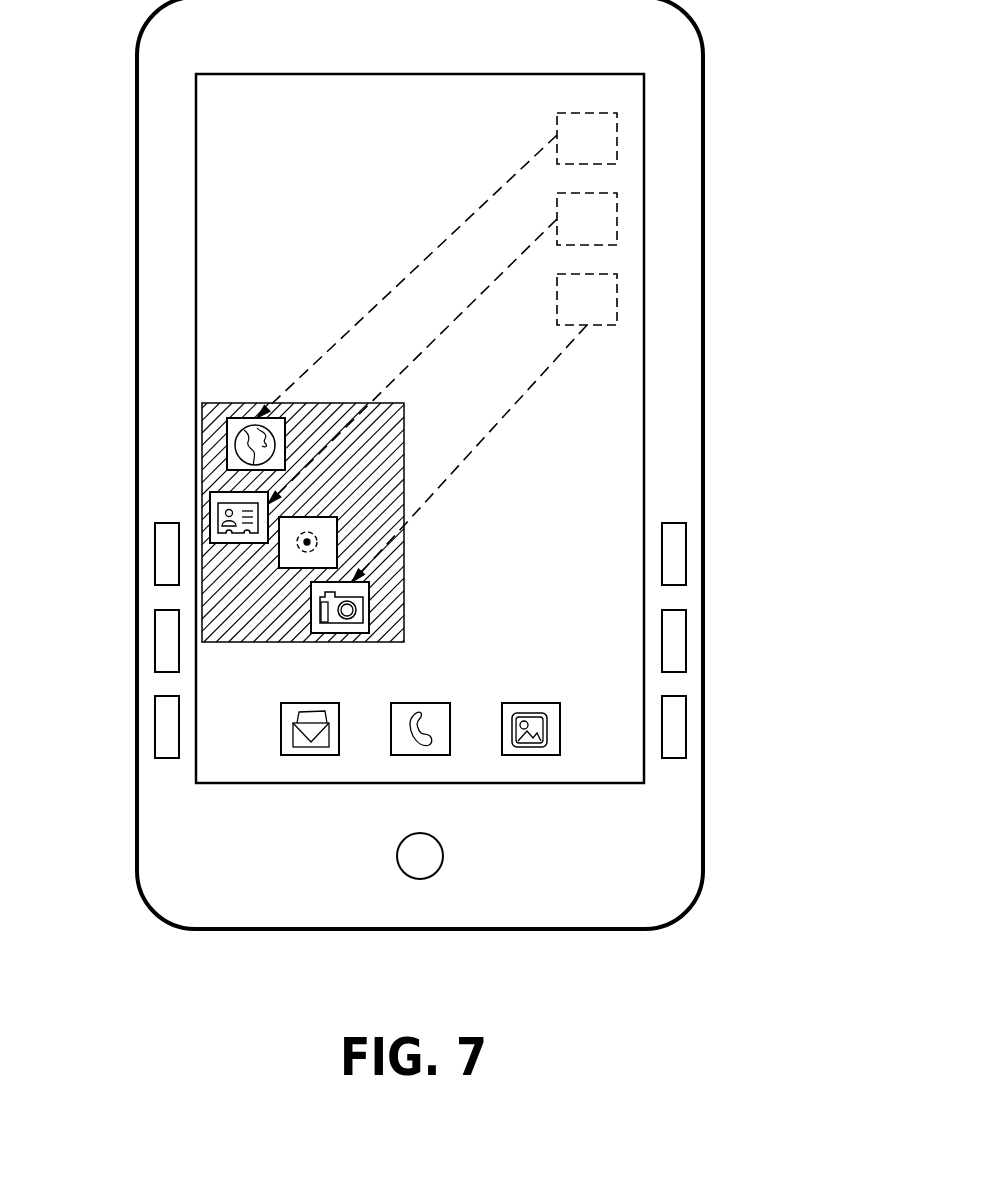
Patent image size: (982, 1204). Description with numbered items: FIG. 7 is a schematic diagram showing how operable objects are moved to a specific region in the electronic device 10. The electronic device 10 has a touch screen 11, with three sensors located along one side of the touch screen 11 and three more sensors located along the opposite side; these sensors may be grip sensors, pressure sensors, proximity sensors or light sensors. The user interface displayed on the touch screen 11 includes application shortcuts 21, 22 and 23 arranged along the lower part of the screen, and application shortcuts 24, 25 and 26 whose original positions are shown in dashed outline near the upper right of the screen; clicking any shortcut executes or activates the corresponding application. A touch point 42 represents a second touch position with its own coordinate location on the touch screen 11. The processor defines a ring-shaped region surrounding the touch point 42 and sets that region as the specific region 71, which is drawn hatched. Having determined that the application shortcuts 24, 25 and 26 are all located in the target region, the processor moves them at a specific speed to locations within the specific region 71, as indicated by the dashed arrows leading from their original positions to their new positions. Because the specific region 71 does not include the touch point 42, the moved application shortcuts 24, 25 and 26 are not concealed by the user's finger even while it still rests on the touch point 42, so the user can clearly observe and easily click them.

The electronic device 10 is at (137, 163).
The touch screen 11 is at (196, 275).
The application shortcut 21 is at (310, 702).
The application shortcut 22 is at (420, 702).
The application shortcut 23 is at (530, 702).
The application shortcut 24 is at (250, 417).
The application shortcut 25 is at (238, 545).
The application shortcut 26 is at (369, 607).
The touch point 42 is at (338, 537).
The specific region 71 is at (404, 455).